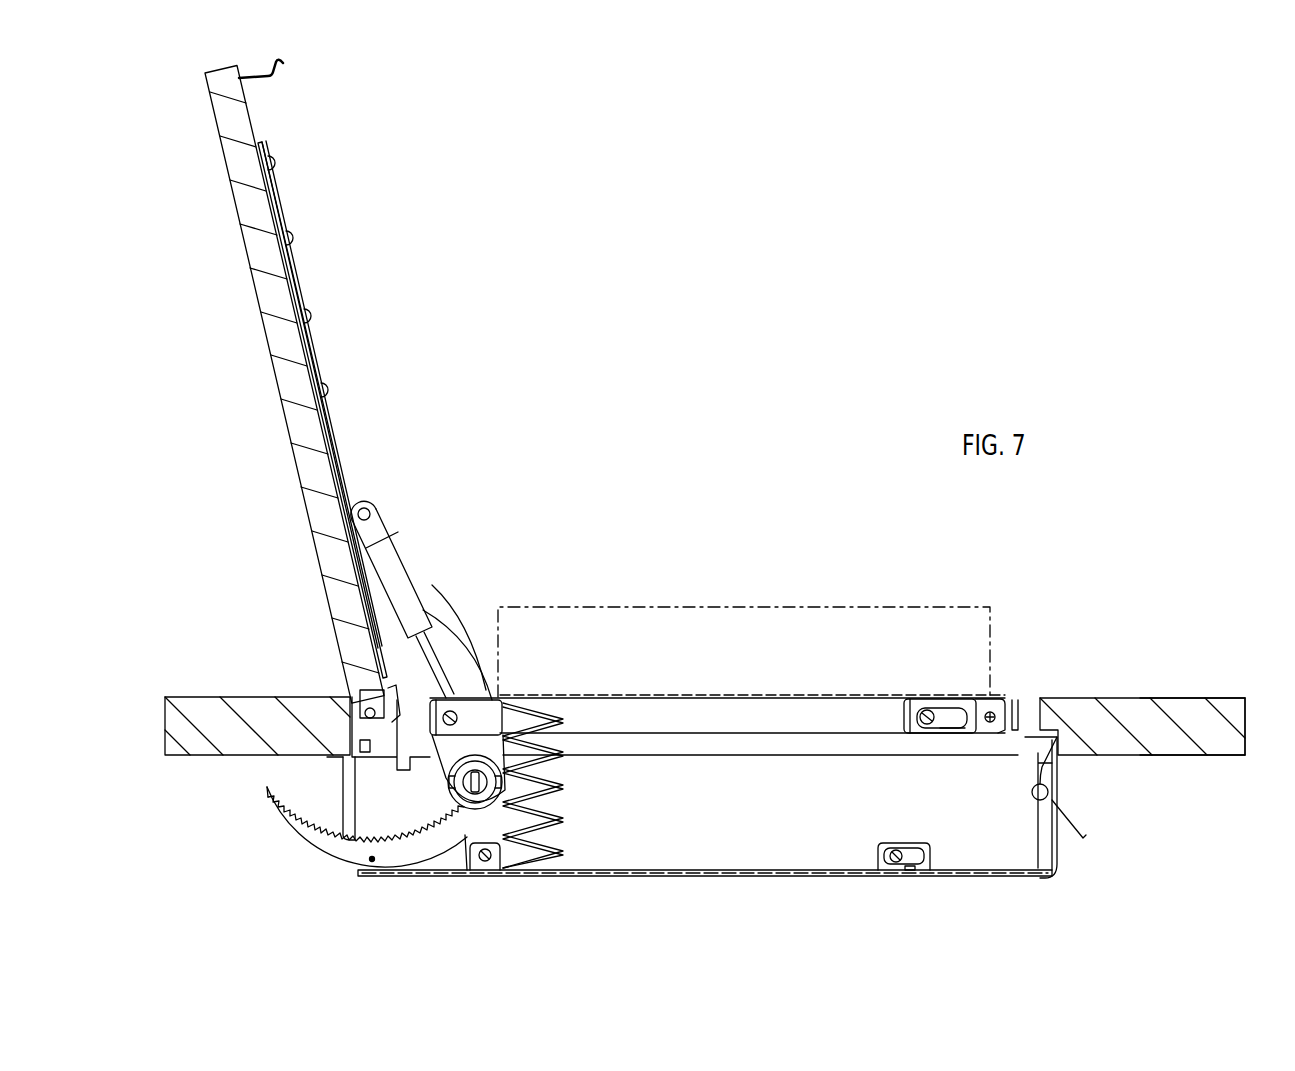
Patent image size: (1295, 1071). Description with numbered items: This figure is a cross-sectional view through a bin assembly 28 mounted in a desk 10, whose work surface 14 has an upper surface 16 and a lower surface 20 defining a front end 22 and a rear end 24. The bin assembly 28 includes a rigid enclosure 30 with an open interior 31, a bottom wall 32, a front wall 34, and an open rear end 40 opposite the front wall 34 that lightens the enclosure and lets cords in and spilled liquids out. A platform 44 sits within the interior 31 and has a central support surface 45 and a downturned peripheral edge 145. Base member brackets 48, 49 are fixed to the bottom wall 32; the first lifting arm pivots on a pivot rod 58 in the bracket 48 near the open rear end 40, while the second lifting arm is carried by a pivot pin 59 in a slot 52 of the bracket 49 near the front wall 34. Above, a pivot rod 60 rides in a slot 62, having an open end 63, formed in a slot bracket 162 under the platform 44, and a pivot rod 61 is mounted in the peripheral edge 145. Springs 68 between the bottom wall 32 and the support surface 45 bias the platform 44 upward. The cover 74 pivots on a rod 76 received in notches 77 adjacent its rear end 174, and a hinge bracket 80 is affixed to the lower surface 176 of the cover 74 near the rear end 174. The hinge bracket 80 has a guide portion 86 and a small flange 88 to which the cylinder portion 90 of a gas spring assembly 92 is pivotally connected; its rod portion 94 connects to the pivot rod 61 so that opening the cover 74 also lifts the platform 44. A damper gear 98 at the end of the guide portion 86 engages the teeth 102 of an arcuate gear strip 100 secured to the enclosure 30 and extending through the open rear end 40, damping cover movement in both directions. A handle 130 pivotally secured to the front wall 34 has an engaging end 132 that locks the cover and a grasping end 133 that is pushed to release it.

The desk 10 is at (1175, 628).
The work surface 14 is at (1077, 690).
The upper surface 16 is at (1215, 692).
The lower surface 20 is at (1205, 755).
The front end 22 is at (1250, 718).
The rear end 24 is at (165, 722).
The bin assembly 28 is at (1175, 822).
The enclosure 30 is at (995, 880).
The open interior 31 is at (727, 799).
The bottom wall 32 is at (693, 878).
The front wall 34 is at (1060, 858).
The open rear end 40 is at (338, 786).
The platform 44 is at (588, 692).
The central support surface 45 is at (638, 695).
The base member bracket 48 is at (465, 852).
The base member bracket 49 is at (883, 845).
The slot 52 is at (910, 878).
The pivot rod 58 is at (485, 862).
The pivot pin 59 is at (898, 852).
The pivot rod 60 is at (928, 712).
The pivot rod 61 is at (445, 720).
The slot 62 is at (955, 735).
The open end 63 is at (930, 735).
The springs 68 is at (560, 790).
The cover 74 is at (405, 262).
The rod 76 is at (370, 708).
The notches 77 is at (362, 695).
The hinge bracket 80 is at (497, 665).
The guide portion 86 is at (455, 640).
The small flange 88 is at (355, 505).
The cylinder portion 90 is at (392, 545).
The gas spring assembly 92 is at (413, 568).
The rod portion 94 is at (440, 690).
The damper gear 98 is at (455, 795).
The arcuate gear strip 100 is at (265, 828).
The teeth 102 is at (315, 832).
The handle 130 is at (1068, 770).
The engaging end 132 is at (1025, 760).
The grasping end 133 is at (1080, 828).
The downturned peripheral edge 145 is at (1015, 712).
The slot bracket 162 is at (908, 705).
The rear end 174 is at (352, 735).
The lower surface 176 is at (328, 440).